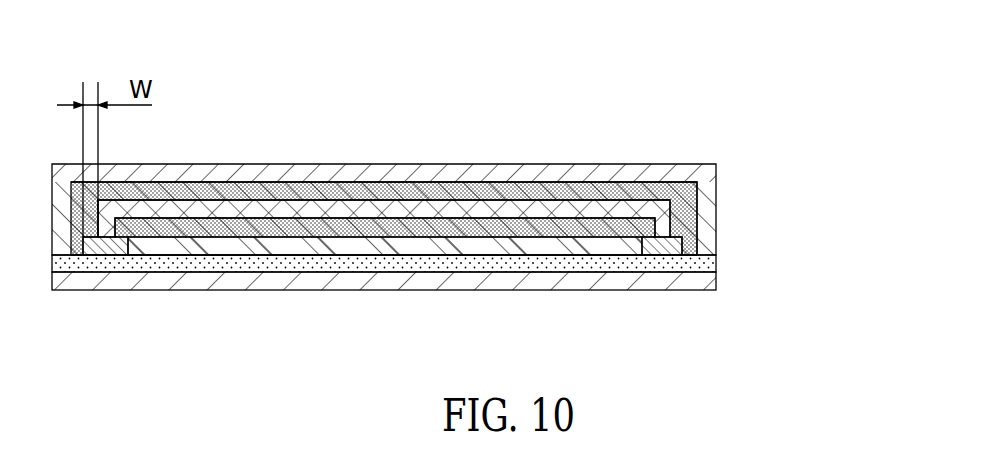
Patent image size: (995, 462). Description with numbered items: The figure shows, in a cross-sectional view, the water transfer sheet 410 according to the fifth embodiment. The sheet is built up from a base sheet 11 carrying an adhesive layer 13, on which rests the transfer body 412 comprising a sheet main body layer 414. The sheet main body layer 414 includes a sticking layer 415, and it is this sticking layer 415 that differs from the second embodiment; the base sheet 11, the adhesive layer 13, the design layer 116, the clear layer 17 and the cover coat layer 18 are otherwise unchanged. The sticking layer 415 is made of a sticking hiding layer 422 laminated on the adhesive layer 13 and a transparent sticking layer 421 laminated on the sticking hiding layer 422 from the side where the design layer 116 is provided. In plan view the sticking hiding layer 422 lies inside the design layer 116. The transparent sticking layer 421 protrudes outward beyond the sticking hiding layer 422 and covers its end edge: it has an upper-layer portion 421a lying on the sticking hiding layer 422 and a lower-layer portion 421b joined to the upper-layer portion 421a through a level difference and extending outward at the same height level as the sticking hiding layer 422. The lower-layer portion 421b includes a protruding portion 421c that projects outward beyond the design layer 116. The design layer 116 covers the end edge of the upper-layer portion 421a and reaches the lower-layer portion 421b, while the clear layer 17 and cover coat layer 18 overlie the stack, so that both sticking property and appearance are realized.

The water transfer sheet 410 is at (507, 193).
The transfer body 412 is at (507, 204).
The sheet main body layer 414 is at (485, 230).
The sticking layer 415 is at (455, 269).
The cover coat layer 18 is at (607, 180).
The clear layer 17 is at (616, 192).
The design layer 116 is at (652, 202).
The sticking hiding layer 422 is at (652, 222).
The transparent sticking layer 421 is at (426, 293).
The upper-layer portion 421a is at (443, 240).
The lower-layer portion 421b is at (662, 250).
The protruding portion 421c is at (96, 253).
The adhesive layer 13 is at (716, 258).
The base sheet 11 is at (716, 283).